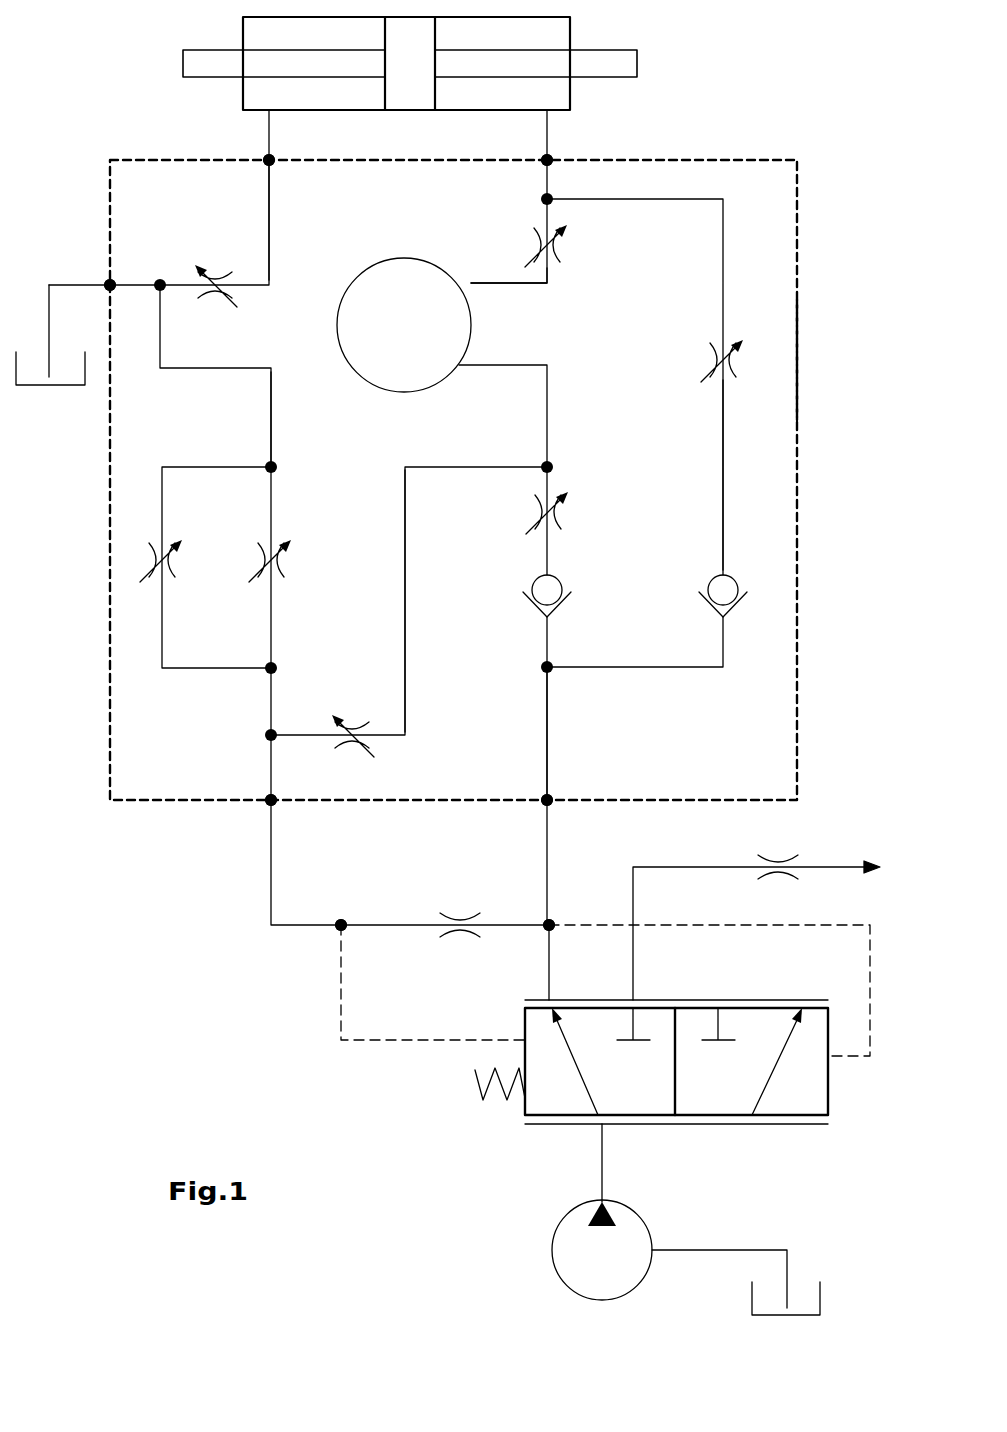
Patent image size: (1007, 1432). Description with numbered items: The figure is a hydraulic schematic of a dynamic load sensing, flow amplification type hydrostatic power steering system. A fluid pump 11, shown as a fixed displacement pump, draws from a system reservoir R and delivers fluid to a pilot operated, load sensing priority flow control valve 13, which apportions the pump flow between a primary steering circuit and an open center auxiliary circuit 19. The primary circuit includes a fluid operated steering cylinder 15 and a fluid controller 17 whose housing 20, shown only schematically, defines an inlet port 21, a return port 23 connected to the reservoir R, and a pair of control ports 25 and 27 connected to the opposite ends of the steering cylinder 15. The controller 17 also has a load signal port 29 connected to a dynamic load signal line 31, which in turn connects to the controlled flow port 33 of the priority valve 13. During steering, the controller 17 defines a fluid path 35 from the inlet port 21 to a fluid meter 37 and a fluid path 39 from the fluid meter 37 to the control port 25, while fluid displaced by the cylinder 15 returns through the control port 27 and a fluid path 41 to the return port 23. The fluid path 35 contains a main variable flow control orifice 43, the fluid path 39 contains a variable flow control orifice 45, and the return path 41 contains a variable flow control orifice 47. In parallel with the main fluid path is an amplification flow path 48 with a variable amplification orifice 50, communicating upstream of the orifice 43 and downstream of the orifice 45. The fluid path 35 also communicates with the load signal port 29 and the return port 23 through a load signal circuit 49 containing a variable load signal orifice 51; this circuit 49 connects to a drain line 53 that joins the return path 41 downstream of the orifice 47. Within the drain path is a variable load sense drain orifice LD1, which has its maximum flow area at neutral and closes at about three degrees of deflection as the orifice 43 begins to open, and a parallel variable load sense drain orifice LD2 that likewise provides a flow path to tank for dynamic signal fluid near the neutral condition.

The fluid pump 11 is at (552, 1258).
The load sensing priority flow control valve 13 is at (782, 1131).
The steering cylinder 15 is at (571, 32).
The fluid controller 17 is at (812, 220).
The open center auxiliary circuit 19 is at (780, 855).
The housing 20 is at (800, 355).
The inlet port 21 is at (548, 803).
The return port 23 is at (108, 282).
The control port 25 is at (548, 157).
The control port 27 is at (268, 157).
The load signal port 29 is at (272, 803).
The dynamic load signal line 31 is at (339, 927).
The controlled flow port 33 is at (552, 920).
The fluid path 35 is at (550, 725).
The fluid meter 37 is at (419, 340).
The fluid path 39 is at (549, 276).
The fluid path 41 is at (270, 218).
The main variable flow control orifice 43 is at (562, 516).
The variable flow control orifice 45 is at (560, 244).
The variable flow control orifice 47 is at (200, 278).
The amplification flow path 48 is at (724, 407).
The load signal circuit 49 is at (405, 652).
The variable amplification orifice 50 is at (727, 345).
The variable load signal orifice 51 is at (371, 741).
The drain line 53 is at (272, 415).
The variable load sense drain orifice LD1 is at (272, 540).
The variable load sense drain orifice LD2 is at (156, 580).
The system reservoir R is at (24, 387).